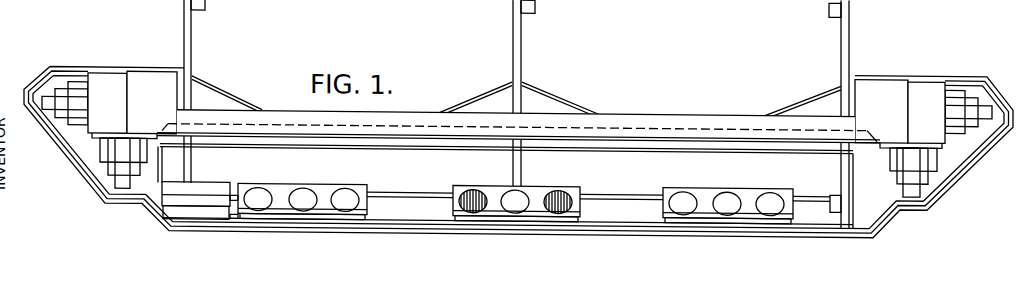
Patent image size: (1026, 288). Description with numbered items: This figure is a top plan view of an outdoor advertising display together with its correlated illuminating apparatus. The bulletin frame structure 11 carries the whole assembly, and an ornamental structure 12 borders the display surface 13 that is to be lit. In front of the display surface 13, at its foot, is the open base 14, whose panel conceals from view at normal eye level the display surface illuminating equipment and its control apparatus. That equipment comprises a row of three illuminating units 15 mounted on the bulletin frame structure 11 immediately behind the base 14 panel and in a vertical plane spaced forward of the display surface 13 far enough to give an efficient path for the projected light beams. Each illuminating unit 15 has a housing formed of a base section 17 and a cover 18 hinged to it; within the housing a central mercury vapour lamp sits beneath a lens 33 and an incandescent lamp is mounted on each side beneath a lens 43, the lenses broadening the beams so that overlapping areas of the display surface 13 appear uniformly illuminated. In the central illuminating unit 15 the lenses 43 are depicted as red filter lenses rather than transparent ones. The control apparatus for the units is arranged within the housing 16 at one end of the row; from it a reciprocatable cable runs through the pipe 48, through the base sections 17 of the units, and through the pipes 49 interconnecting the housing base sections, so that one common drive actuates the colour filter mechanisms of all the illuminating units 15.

The bulletin frame structure 11 is at (185, 31).
The ornamental structure 12 is at (378, 134).
The display surface 13 is at (408, 124).
The open base 14 is at (403, 224).
The illuminating unit 15 is at (323, 189).
The control apparatus housing 16 is at (216, 188).
The base section 17 is at (325, 216).
The cover 18 is at (278, 180).
The lens 33 is at (515, 202).
The lens 43 is at (478, 177).
The pipe 48 is at (232, 217).
The pipe 49 is at (383, 216).